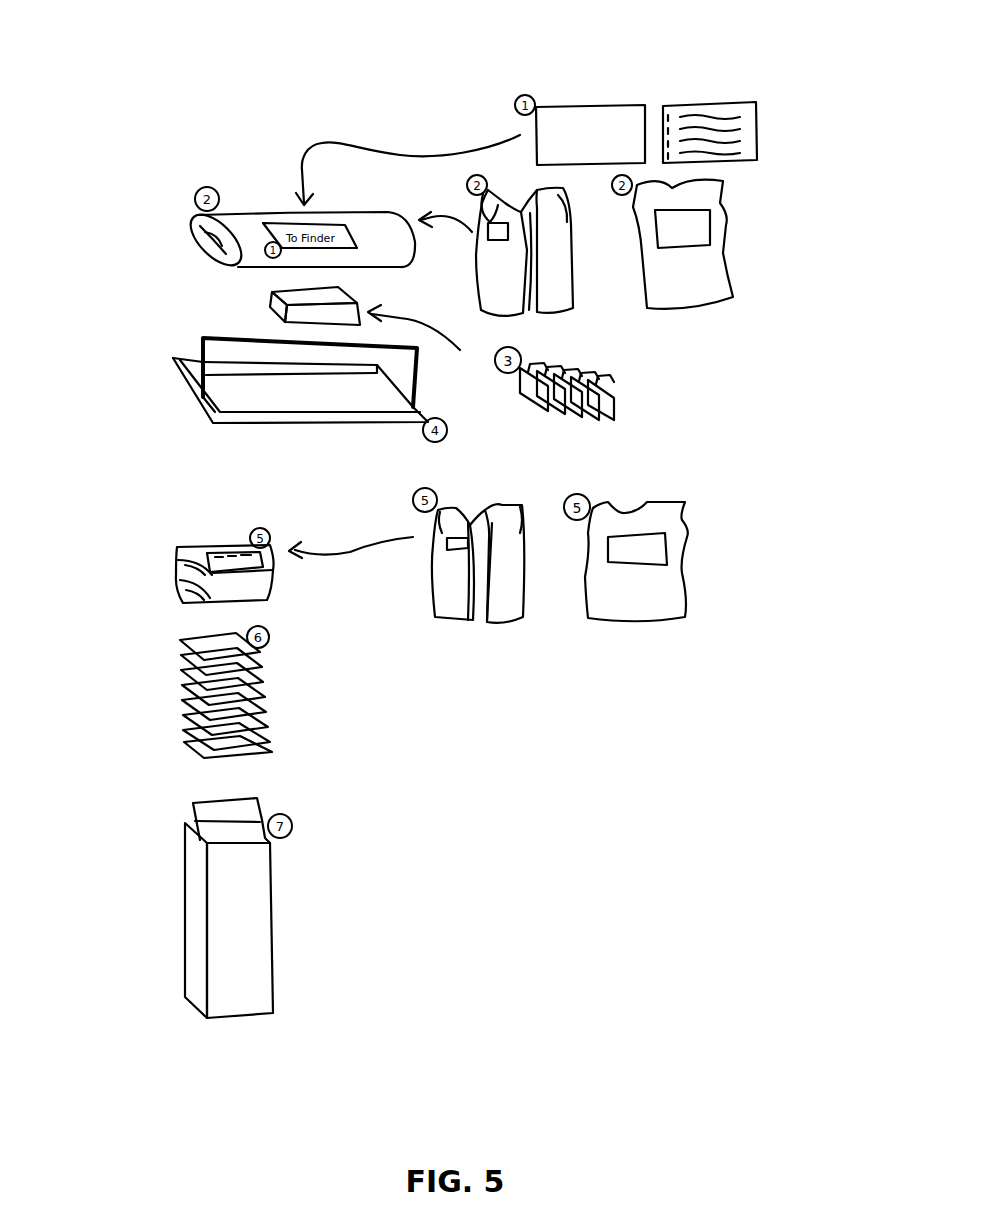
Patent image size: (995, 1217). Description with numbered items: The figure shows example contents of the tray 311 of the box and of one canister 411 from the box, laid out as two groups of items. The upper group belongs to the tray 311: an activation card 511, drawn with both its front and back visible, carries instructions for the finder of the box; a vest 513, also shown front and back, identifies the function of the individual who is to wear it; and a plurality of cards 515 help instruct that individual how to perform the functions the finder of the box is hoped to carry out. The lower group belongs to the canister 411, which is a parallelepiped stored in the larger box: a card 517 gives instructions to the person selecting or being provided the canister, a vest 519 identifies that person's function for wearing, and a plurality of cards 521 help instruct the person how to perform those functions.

The activation card 511 is at (609, 100).
The vest 513 is at (562, 313).
The plurality of cards 515 is at (605, 393).
The tray 311 is at (200, 418).
The vest 519 is at (520, 615).
The card 517 is at (178, 648).
The plurality of cards 521 is at (165, 720).
The canister 411 is at (180, 923).